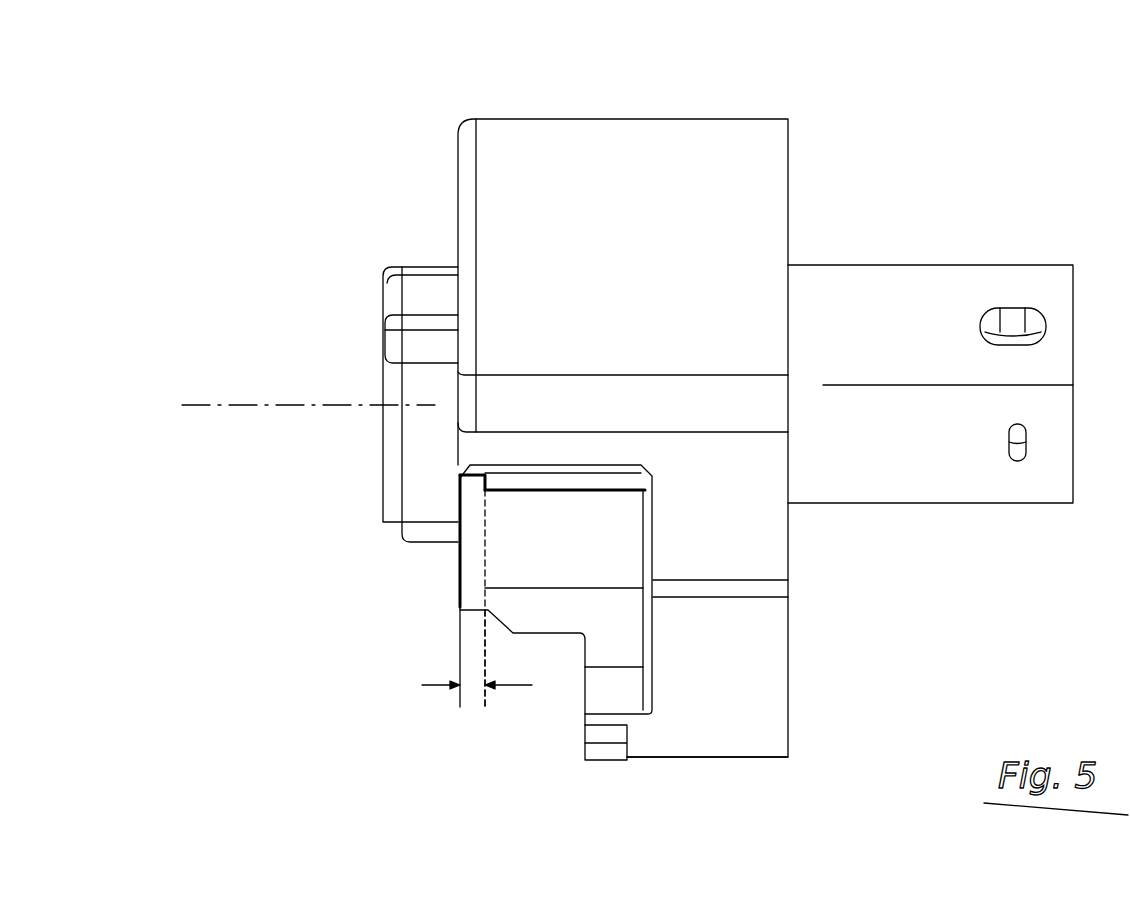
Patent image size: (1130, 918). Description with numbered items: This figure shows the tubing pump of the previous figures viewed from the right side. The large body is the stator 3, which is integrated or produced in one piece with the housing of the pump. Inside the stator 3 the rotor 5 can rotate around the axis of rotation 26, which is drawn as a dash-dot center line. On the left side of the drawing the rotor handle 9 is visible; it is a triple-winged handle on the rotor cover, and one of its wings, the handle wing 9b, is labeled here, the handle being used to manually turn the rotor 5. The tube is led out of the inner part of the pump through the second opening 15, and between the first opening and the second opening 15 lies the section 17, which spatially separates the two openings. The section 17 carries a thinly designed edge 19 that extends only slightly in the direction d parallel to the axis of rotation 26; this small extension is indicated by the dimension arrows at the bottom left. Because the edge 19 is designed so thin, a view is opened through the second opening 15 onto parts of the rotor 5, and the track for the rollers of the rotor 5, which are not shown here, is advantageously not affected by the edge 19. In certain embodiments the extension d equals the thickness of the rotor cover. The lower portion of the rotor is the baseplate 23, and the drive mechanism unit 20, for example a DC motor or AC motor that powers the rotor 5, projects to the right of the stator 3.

The stator 3 is at (637, 252).
The rotor 5 is at (537, 480).
The rotor handle 9 is at (438, 462).
The handle wing 9b is at (410, 348).
The second opening 15 is at (590, 482).
The section 17 is at (570, 572).
The edge 19 is at (469, 482).
The drive mechanism unit 20 is at (904, 310).
The baseplate 23 is at (755, 722).
The axis of rotation 26 is at (192, 413).
The direction d is at (477, 716).